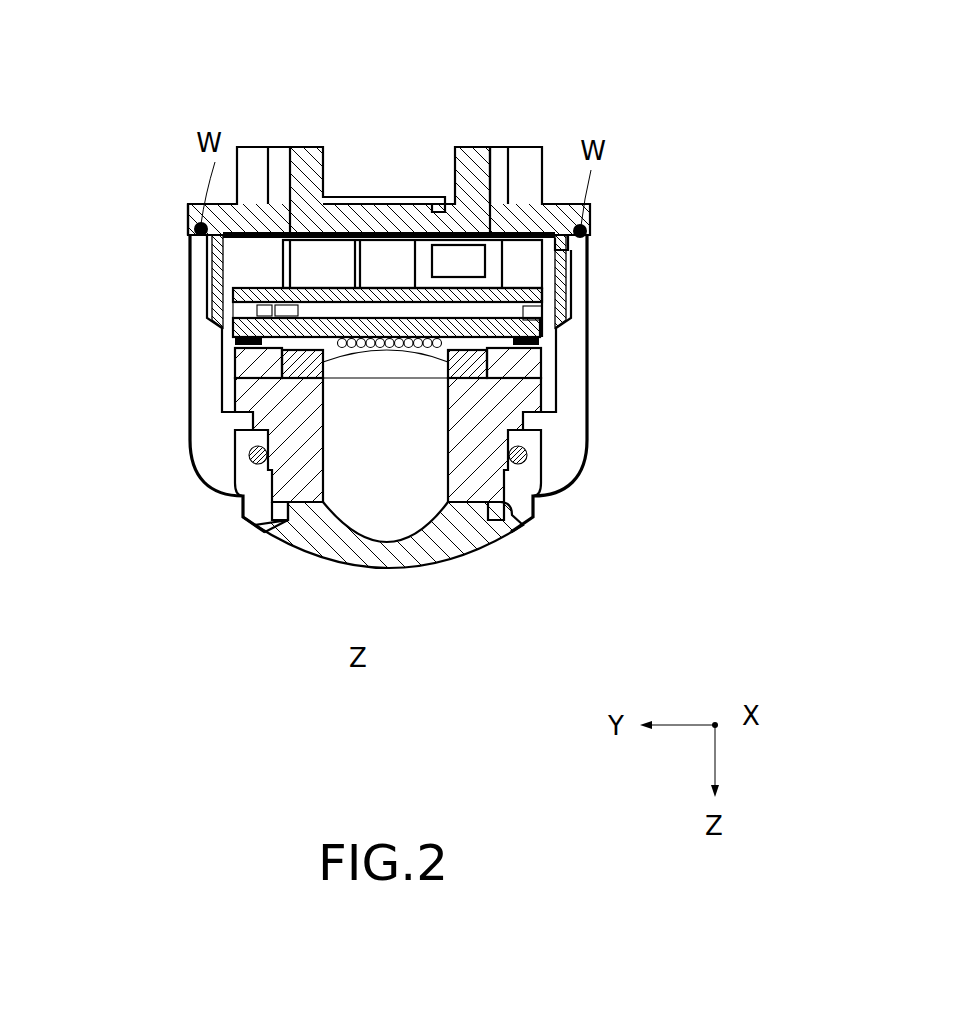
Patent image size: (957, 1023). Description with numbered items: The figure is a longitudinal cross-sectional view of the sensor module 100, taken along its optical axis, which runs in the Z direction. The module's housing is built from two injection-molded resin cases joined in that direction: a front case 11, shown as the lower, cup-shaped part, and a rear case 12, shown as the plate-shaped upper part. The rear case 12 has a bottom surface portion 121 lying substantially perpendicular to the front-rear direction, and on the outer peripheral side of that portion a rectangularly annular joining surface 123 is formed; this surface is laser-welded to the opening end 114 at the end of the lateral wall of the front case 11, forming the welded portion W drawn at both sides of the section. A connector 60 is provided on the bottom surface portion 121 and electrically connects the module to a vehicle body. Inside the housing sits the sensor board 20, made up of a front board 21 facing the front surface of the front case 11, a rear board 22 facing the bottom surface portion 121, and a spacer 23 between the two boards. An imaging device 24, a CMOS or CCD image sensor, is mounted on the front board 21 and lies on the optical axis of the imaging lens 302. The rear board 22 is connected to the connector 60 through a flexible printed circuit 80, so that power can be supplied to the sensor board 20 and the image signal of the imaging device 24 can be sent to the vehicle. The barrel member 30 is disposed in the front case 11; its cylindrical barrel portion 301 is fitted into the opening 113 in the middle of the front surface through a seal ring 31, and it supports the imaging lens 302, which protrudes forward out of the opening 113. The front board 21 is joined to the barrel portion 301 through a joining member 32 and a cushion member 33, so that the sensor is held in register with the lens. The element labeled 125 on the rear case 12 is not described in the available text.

The sensor module 100 is at (689, 102).
The rear case 12 is at (243, 102).
The connector 60 is at (458, 147).
The bottom surface portion 121 is at (561, 205).
The flexible printed circuit 80 is at (387, 248).
The joining surface 123 is at (191, 222).
The opening end 114 is at (196, 236).
The engaging wall of cover 125 is at (214, 305).
The front case 11 is at (166, 416).
The sensor board 20 is at (653, 248).
The rear board 22 is at (545, 292).
The spacer 23 is at (545, 309).
The front board 21 is at (510, 312).
The imaging device 24 is at (460, 346).
The joining member 32 is at (240, 343).
The cushion member 33 is at (283, 365).
The barrel member 30 is at (305, 578).
The barrel portion 301 is at (250, 452).
The seal ring 31 is at (527, 450).
The imaging lens 302 is at (450, 565).
The opening 113 is at (280, 535).